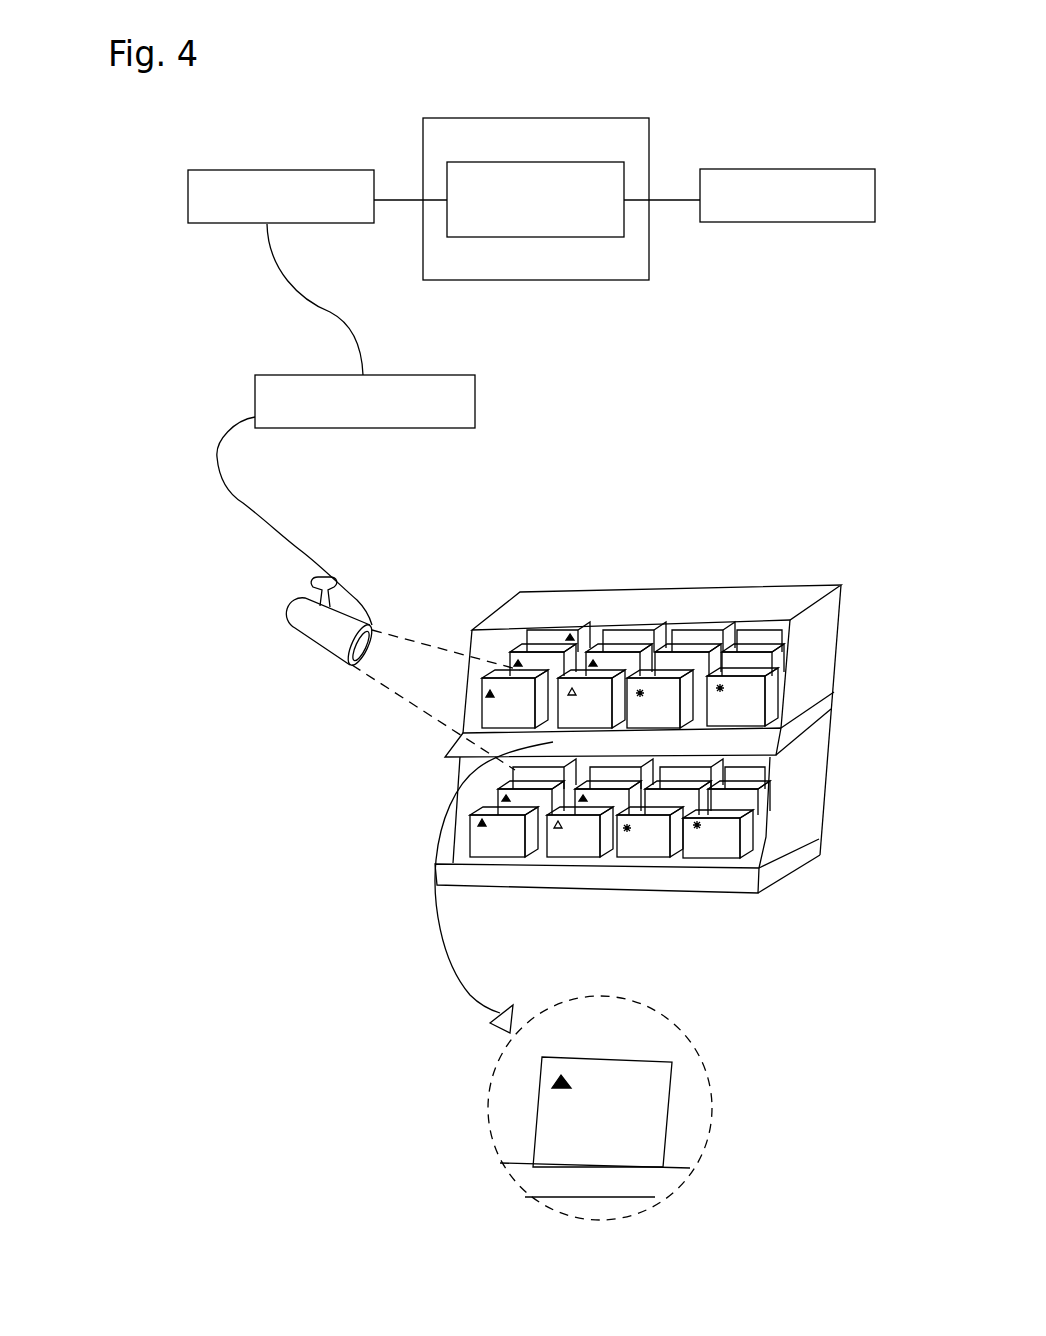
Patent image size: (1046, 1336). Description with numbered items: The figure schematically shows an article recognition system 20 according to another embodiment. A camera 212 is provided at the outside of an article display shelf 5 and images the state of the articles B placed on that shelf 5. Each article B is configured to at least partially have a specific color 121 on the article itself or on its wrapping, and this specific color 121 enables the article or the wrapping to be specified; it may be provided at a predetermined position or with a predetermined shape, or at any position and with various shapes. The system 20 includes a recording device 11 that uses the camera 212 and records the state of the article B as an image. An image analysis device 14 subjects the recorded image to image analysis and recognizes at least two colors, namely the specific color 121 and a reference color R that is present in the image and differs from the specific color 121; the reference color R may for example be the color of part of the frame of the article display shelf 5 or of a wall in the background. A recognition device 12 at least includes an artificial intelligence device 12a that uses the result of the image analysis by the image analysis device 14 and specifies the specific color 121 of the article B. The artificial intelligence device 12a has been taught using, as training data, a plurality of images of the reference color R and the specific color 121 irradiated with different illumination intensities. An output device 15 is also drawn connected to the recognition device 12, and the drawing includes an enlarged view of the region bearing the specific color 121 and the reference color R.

The article recognition system 20 is at (433, 94).
The image analysis device 14 is at (245, 172).
The recognition device 12 is at (435, 165).
The artificial intelligence device 12a is at (594, 235).
The output device 15 is at (853, 178).
The recording device 11 is at (463, 422).
The camera 212 is at (318, 630).
The article display shelf 5 is at (808, 593).
The article B is at (755, 692).
The specific color 121 is at (723, 691).
The reference color R is at (455, 754).